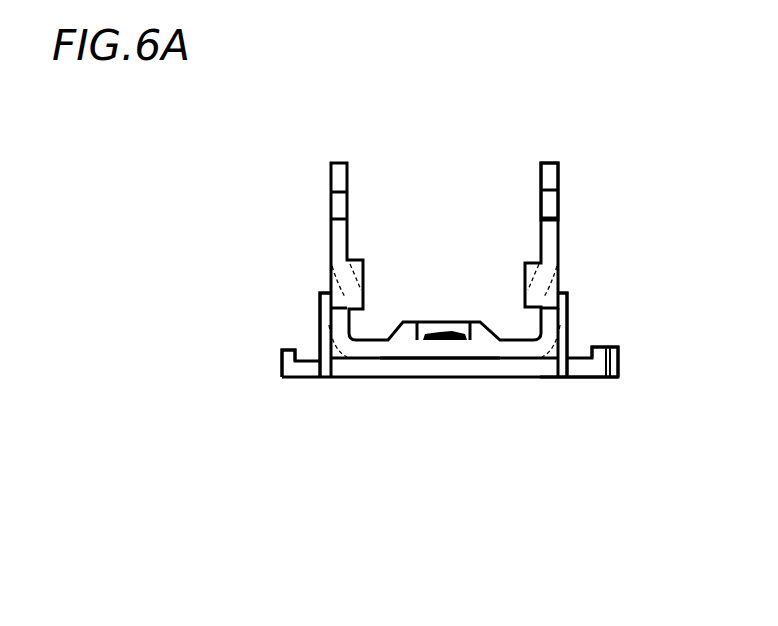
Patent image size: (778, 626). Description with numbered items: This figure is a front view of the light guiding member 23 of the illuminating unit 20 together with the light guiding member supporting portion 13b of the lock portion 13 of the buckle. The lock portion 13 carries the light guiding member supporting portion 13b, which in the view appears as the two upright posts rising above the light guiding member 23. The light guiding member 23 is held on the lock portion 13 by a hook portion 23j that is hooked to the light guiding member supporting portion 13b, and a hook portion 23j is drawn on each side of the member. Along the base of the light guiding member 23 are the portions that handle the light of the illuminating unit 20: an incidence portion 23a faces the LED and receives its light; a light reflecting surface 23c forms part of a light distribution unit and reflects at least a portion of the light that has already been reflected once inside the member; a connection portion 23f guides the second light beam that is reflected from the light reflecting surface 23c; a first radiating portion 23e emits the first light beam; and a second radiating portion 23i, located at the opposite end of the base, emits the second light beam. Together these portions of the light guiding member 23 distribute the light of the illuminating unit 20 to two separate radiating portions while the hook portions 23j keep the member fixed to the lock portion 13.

The lock portion 13 is at (608, 164).
The light guiding member supporting portion 13b is at (551, 161).
The illuminating unit 20 is at (448, 232).
The light guiding member 23 is at (450, 374).
The incidence portion 23a is at (597, 346).
The light reflecting surface 23c is at (612, 370).
The first radiating portion 23e is at (588, 376).
The connection portion 23f is at (437, 366).
The second radiating portion 23i is at (288, 358).
The hook portion 23j is at (320, 294).